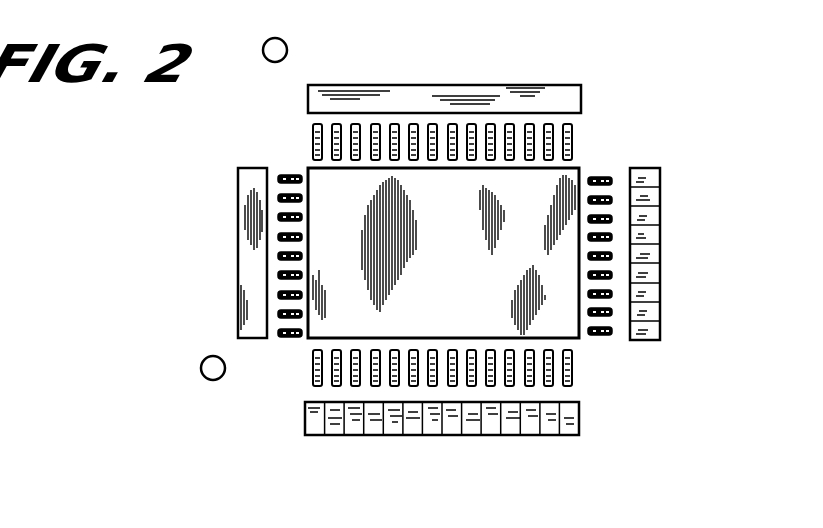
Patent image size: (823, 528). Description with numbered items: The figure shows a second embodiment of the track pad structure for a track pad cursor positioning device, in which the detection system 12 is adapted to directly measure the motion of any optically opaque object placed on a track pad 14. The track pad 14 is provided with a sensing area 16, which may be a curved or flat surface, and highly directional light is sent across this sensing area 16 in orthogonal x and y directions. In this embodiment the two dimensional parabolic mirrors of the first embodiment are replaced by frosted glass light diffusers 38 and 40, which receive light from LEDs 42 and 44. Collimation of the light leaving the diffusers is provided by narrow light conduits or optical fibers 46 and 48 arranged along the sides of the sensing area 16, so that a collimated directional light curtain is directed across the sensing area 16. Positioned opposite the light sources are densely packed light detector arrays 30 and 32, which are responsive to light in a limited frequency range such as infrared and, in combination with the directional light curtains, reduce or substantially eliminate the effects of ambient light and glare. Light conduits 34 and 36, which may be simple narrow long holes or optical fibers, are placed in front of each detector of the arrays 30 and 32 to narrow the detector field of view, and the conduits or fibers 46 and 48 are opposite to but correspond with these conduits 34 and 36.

The detection system 12 is at (651, 373).
The track pad 14 is at (553, 168).
The sensing area 16 is at (458, 270).
The light detector array 30 is at (520, 435).
The light detector array 32 is at (660, 254).
The light conduit 34 is at (573, 365).
The light conduit 36 is at (605, 177).
The frosted glass light diffuser 38 is at (515, 88).
The frosted glass light diffuser 40 is at (238, 262).
The LED 42 is at (201, 371).
The LED 44 is at (288, 47).
The light conduit or optical fiber 46 is at (313, 134).
The light conduit or optical fiber 48 is at (286, 337).